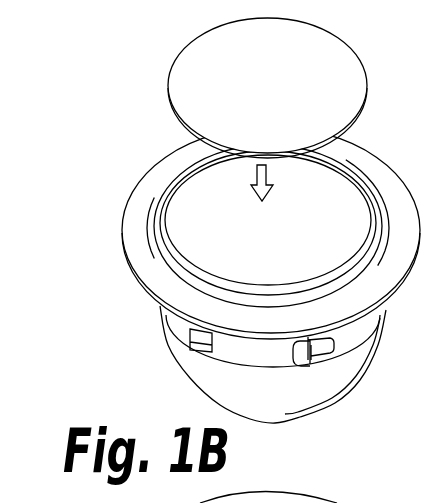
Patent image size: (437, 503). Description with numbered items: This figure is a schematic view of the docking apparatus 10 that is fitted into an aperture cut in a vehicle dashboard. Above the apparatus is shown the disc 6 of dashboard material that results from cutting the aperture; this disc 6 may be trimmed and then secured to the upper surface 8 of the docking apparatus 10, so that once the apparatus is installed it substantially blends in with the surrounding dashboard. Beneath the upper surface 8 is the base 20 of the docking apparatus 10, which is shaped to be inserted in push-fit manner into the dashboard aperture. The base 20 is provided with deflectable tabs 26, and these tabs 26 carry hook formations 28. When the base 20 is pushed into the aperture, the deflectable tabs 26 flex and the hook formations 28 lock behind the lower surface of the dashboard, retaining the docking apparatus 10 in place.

The disc 6 is at (197, 60).
The upper surface 8 is at (315, 192).
The docking apparatus 10 is at (249, 280).
The base 20 is at (352, 333).
The deflectable tabs 26 is at (297, 353).
The hook formations 28 is at (327, 350).